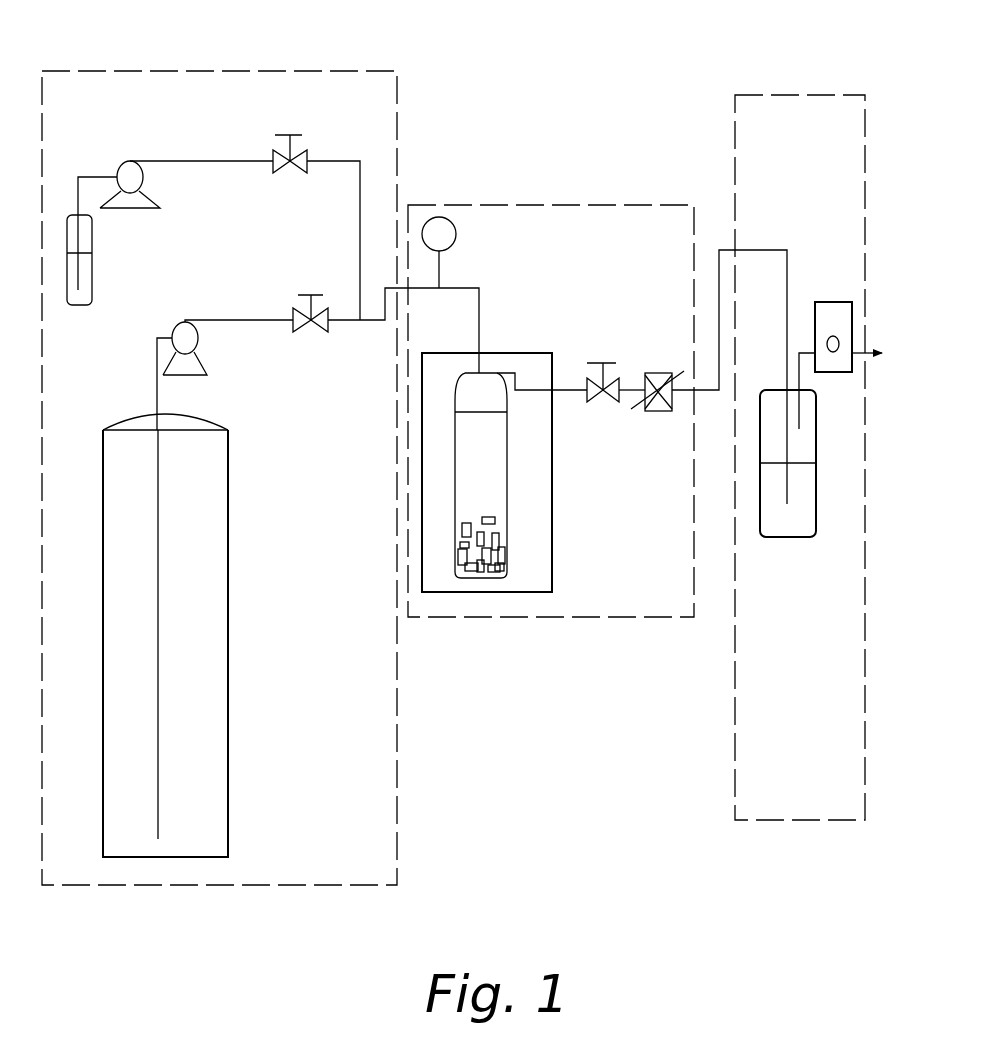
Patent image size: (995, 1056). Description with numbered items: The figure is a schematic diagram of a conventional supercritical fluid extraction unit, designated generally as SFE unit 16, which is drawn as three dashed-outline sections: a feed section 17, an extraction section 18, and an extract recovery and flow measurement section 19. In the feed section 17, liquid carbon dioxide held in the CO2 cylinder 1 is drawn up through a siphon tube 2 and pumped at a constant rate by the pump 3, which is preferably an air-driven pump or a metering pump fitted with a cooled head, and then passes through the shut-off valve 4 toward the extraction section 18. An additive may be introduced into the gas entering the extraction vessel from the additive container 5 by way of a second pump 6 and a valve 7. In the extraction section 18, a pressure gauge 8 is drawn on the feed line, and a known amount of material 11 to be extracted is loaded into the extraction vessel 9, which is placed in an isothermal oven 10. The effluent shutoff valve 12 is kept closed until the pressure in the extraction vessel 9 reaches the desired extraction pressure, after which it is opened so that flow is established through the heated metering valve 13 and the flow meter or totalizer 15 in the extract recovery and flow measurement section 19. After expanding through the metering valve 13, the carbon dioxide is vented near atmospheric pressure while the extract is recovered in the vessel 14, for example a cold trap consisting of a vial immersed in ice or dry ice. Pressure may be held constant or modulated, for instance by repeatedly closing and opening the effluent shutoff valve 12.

The CO2 cylinder 1 is at (103, 668).
The siphon tube 2 is at (158, 600).
The pump 3 is at (184, 322).
The shut-off valve 4 is at (309, 294).
The additive container 5 is at (66, 215).
The pump 6 is at (124, 163).
The valve 7 is at (295, 135).
The pressure gauge 8 is at (457, 238).
The extraction vessel 9 is at (461, 385).
The isothermal oven 10 is at (552, 500).
The material 11 is at (455, 548).
The effluent shutoff valve 12 is at (607, 365).
The heated metering valve 13 is at (653, 373).
The vessel 14 is at (816, 524).
The flow meter or totalizer 15 is at (832, 302).
The SFE unit 16 is at (603, 106).
The feed section 17 is at (399, 116).
The extraction section 18 is at (591, 204).
The extract recovery and flow measurement section 19 is at (779, 93).